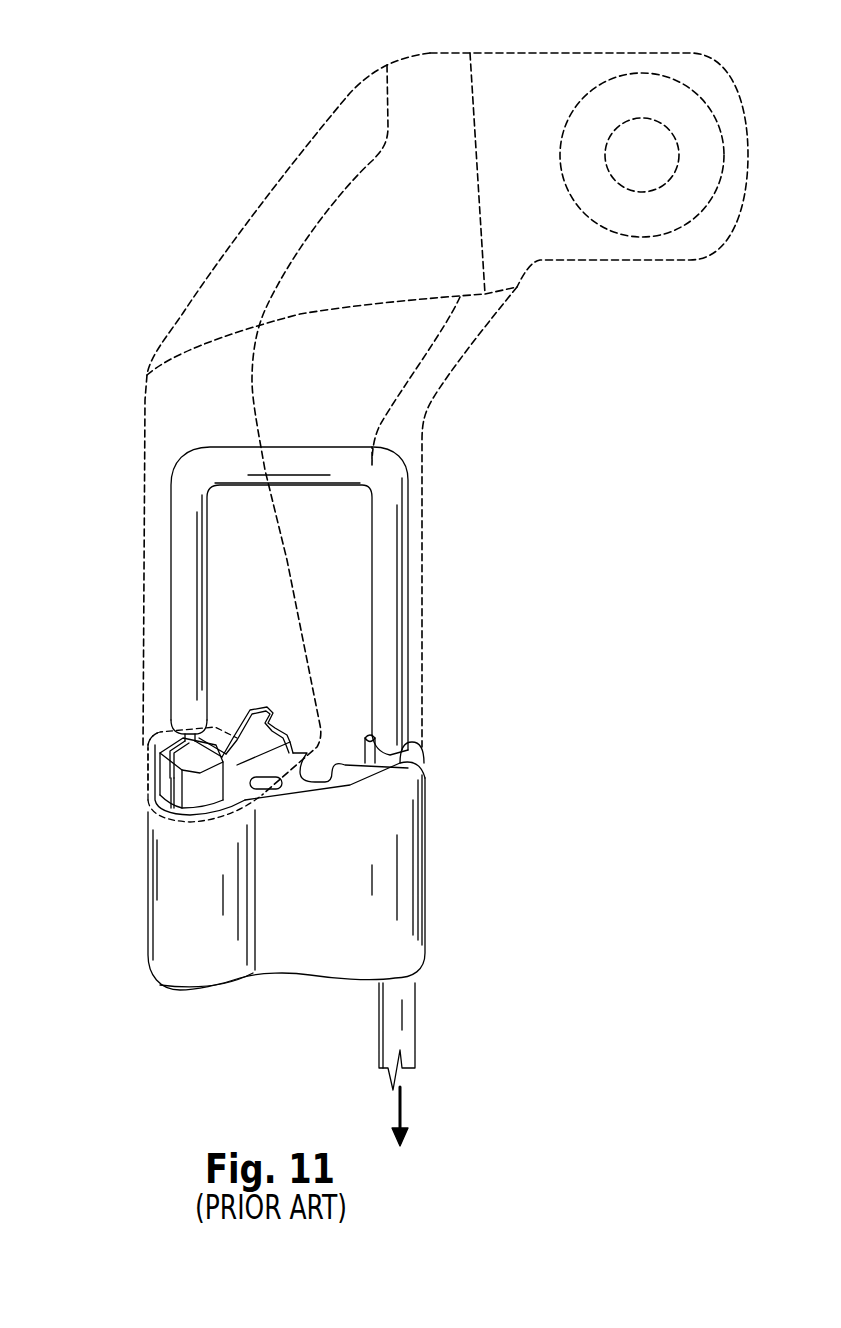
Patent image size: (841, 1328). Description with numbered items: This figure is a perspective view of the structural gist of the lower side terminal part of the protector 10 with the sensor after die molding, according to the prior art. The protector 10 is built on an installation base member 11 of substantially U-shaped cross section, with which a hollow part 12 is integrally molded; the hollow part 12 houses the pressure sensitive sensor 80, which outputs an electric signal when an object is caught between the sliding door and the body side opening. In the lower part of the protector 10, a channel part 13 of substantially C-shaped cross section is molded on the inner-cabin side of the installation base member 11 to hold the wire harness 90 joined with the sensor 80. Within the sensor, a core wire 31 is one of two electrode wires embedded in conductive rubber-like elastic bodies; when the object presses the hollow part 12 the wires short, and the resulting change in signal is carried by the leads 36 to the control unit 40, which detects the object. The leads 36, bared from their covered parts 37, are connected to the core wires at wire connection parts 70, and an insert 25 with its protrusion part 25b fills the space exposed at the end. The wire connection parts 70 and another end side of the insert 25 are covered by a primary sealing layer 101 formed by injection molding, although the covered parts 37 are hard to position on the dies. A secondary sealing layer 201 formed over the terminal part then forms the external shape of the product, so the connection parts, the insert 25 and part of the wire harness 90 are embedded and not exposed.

The protector with the sensor 10 is at (163, 1002).
The installation base member 11 is at (402, 895).
The hollow part 12 is at (220, 973).
The channel part 13 is at (418, 748).
The insert 25 is at (160, 736).
The protrusion part 25b is at (150, 763).
The core wire 31 is at (190, 815).
The lead 36 is at (160, 801).
The covered part 37 is at (167, 775).
The control unit 40 is at (386, 1173).
The wire connection part 70 is at (165, 790).
The pressure sensitive sensor 80 is at (165, 935).
The wire harness 90 is at (395, 568).
The primary sealing layer 101 is at (157, 738).
The secondary sealing layer 201 is at (142, 566).